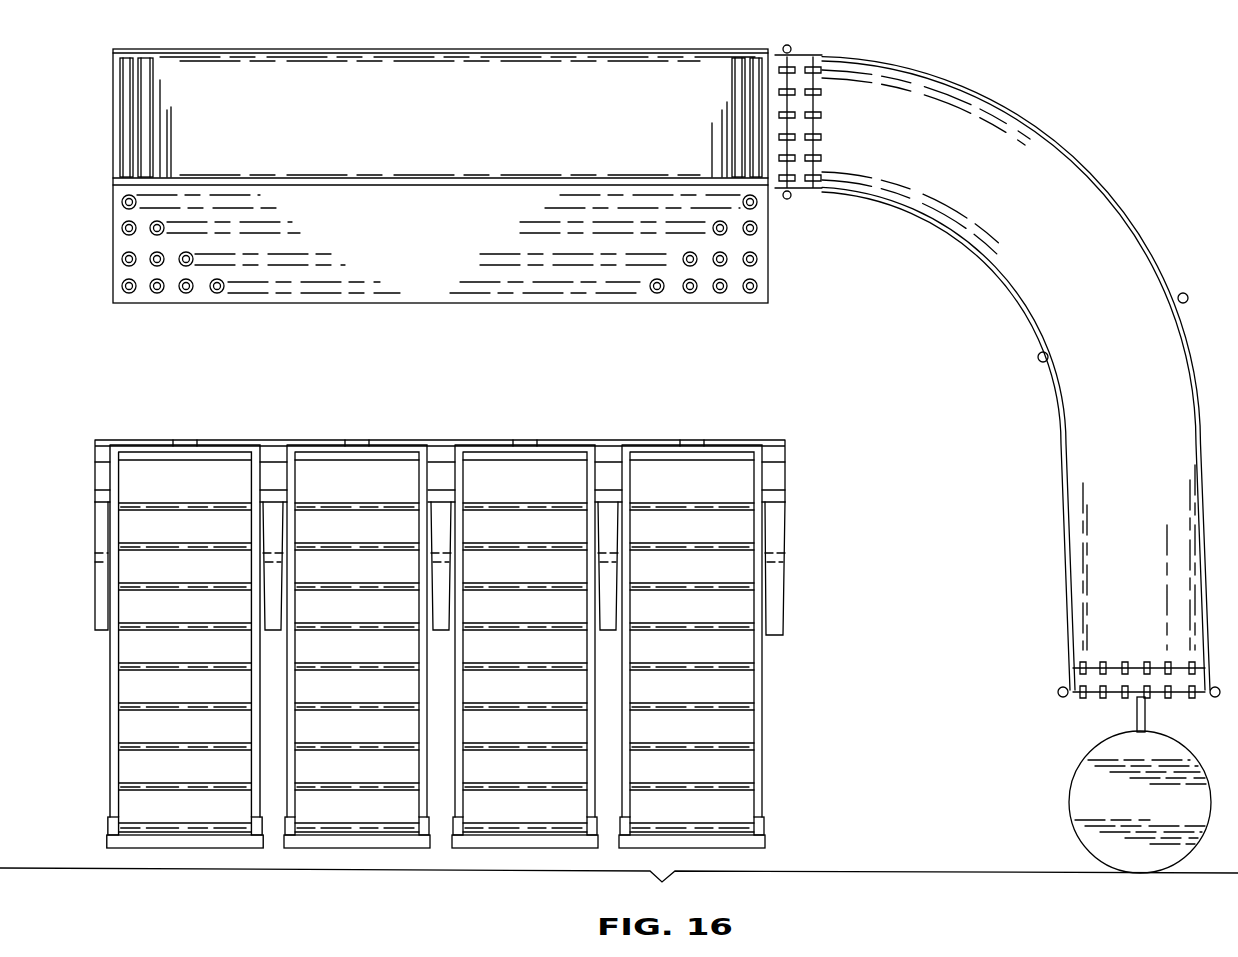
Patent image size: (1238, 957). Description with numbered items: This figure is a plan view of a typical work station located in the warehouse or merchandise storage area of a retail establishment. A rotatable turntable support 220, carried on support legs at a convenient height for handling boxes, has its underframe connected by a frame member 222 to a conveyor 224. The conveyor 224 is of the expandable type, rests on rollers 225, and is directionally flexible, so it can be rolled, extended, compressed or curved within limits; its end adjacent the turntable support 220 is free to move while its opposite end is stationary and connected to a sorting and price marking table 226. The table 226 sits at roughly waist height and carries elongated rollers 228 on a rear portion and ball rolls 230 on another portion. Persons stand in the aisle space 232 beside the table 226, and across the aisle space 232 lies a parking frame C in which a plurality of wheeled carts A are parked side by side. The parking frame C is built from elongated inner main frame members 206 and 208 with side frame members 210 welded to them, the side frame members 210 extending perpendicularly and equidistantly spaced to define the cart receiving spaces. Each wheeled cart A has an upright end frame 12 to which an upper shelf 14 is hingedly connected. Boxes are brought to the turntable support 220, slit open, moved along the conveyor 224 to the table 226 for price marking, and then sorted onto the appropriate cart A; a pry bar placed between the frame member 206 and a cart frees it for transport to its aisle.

The upright end frame 12 is at (247, 837).
The upper shelf 14 is at (107, 700).
The wheeled cart A is at (172, 850).
The parking frame C is at (790, 458).
The inner main frame member 206 is at (272, 448).
The inner main frame member 208 is at (440, 497).
The side frame member 210 is at (97, 612).
The rotatable turntable support 220 is at (1100, 800).
The frame member 222 is at (1137, 722).
The conveyor 224 is at (1100, 590).
The rollers 225 is at (1085, 668).
The sorting and price marking table 226 is at (772, 297).
The elongated rollers 228 is at (113, 127).
The ball rolls 230 is at (120, 287).
The aisle space 232 is at (170, 367).